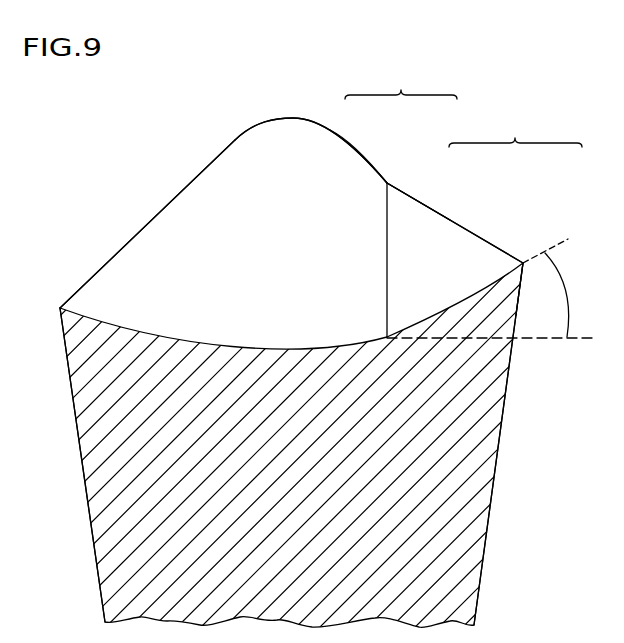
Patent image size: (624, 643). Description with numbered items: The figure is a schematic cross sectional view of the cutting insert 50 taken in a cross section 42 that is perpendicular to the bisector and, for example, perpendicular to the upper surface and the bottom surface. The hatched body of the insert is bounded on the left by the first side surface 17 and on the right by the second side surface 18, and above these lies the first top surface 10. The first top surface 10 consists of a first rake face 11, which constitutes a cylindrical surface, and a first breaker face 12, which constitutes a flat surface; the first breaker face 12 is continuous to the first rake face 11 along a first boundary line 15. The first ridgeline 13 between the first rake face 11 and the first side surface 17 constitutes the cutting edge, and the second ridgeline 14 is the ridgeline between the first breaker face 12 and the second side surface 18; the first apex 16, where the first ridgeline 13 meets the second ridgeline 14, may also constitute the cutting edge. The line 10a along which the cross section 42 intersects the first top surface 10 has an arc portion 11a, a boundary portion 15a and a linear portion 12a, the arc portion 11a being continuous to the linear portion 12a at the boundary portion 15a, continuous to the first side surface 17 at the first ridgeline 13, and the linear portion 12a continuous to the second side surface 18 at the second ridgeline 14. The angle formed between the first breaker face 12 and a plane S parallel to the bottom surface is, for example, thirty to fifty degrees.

The cutting insert 50 is at (474, 110).
The first top surface 10 is at (401, 79).
The first rake face 11 is at (352, 192).
The first boundary line 15 is at (388, 199).
The first breaker face 12 is at (415, 220).
The line 10a is at (515, 128).
The arc portion 11a is at (295, 348).
The boundary portion 15a is at (484, 280).
The linear portion 12a is at (512, 313).
The first ridgeline 13 is at (145, 228).
The second ridgeline 14 is at (532, 257).
The first apex 16 is at (294, 117).
The first side surface 17 is at (80, 454).
The second side surface 18 is at (497, 465).
The cross section 42 is at (465, 513).
The plane S is at (583, 339).